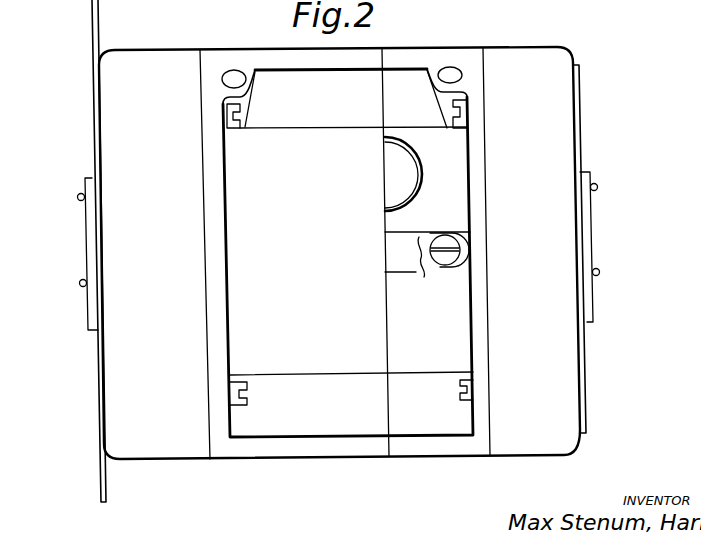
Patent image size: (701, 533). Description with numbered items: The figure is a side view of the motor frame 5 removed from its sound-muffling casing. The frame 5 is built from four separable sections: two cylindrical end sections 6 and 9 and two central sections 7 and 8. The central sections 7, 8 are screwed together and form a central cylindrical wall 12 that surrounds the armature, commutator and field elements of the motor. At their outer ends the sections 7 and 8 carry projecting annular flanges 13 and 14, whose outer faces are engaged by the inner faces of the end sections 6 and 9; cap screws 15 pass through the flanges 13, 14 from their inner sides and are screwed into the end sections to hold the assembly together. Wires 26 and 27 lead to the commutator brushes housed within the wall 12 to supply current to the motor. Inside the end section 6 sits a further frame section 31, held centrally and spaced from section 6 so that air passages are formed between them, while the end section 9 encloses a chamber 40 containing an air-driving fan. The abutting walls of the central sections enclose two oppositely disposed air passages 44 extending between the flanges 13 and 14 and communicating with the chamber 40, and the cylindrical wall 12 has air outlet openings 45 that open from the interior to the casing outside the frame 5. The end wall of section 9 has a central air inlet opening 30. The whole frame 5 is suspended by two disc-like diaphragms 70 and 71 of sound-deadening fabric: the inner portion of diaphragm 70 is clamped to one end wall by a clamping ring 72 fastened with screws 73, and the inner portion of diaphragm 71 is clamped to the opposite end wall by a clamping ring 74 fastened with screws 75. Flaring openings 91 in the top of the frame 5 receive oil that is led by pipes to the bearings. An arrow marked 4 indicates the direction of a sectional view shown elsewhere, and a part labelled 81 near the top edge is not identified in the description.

The section line 4 is at (224, 7).
The motor frame 5 is at (210, 458).
The end section 6 is at (158, 229).
The central section 7 is at (348, 253).
The central section 8 is at (415, 228).
The end section 9 is at (546, 128).
The central cylindrical wall 12 is at (313, 365).
The annular flange 13 is at (213, 300).
The annular flange 14 is at (482, 297).
The cap screw 15 is at (233, 130).
The wire 26 is at (418, 277).
The wire 27 is at (440, 268).
The air inlet opening 30 is at (582, 5).
The frame section 31 is at (170, 10).
The chamber 40 is at (530, 8).
The air passage 44 is at (262, 7).
The air outlet opening 45 is at (410, 178).
The diaphragm 70 is at (92, 33).
The diaphragm 71 is at (581, 136).
The clamping ring 72 is at (89, 228).
The screw 73 is at (80, 288).
The clamping ring 74 is at (587, 218).
The screw 75 is at (599, 271).
The member 81 is at (600, 28).
The flaring opening 91 is at (446, 72).